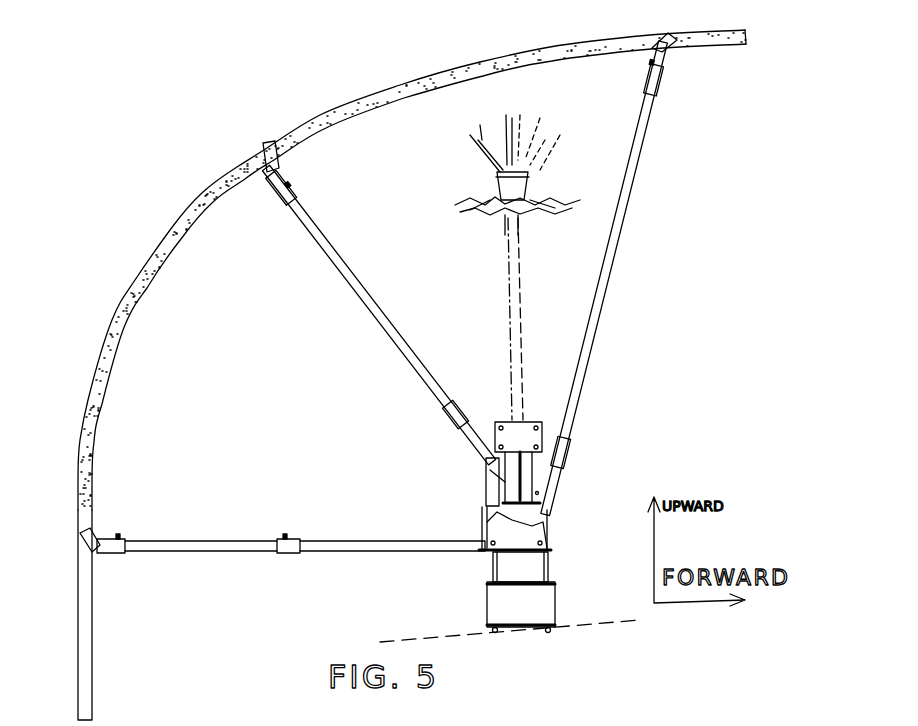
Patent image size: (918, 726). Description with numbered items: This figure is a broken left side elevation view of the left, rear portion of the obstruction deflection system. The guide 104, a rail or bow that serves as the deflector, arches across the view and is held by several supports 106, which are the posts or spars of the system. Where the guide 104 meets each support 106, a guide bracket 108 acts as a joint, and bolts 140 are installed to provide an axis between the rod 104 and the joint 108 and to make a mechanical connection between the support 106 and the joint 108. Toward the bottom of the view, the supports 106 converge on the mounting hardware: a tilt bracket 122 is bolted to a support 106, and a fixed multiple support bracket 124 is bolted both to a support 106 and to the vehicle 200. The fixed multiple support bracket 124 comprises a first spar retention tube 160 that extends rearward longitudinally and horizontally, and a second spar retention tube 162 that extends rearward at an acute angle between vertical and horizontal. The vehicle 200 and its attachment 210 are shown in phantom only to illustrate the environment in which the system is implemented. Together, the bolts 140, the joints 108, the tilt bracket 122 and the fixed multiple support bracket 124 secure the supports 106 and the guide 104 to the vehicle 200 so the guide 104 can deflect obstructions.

The guide 104 is at (165, 256).
The support 106 is at (360, 272).
The guide bracket 108 is at (279, 167).
The bolt 140 is at (266, 145).
The tilt bracket 122 is at (487, 488).
The fixed multiple support bracket 124 is at (537, 418).
The first spar retention tube 160 is at (362, 548).
The second spar retention tube 162 is at (485, 458).
The vehicle 200 is at (427, 633).
The attachment 210 is at (522, 150).